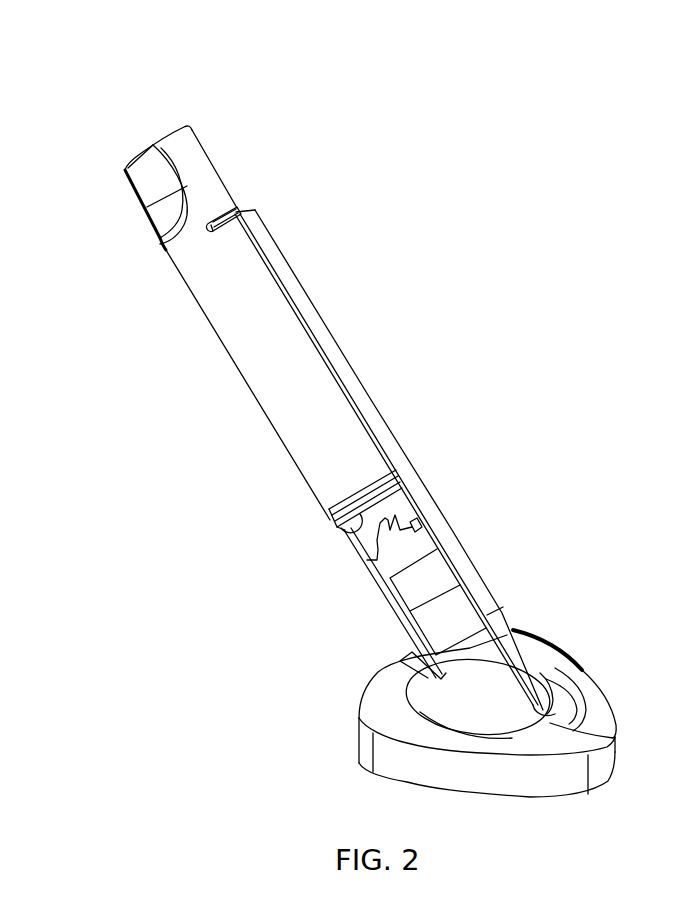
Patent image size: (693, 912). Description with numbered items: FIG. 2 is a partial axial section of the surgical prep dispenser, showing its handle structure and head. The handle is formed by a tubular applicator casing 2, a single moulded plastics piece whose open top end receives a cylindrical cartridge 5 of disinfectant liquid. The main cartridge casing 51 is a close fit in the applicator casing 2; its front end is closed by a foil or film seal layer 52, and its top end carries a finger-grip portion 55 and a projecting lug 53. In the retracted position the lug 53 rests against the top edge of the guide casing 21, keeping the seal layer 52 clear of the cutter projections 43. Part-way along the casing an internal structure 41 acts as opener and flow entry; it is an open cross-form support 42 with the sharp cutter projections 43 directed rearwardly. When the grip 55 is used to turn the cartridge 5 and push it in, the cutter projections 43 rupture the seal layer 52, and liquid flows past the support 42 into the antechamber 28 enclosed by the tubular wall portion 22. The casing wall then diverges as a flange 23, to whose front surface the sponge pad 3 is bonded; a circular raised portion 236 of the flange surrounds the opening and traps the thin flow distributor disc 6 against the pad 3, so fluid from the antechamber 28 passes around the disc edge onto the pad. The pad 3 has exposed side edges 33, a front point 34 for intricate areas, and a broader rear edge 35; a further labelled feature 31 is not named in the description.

The tubular applicator casing 2 is at (395, 463).
The sponge pad 3 is at (487, 712).
The cylindrical cartridge 5 is at (244, 350).
The flow distributor disc 6 is at (521, 713).
The guide casing 21 is at (350, 366).
The tubular wall portion 22 is at (478, 578).
The flange 23 is at (573, 666).
The antechamber 28 is at (461, 628).
The recess 31 is at (552, 738).
The side edges 33 is at (453, 770).
The front point 34 is at (598, 775).
The rear edge 35 is at (370, 690).
The internal structure 41 is at (373, 576).
The cross-form support 42 is at (418, 543).
The cutter projections 43 is at (425, 522).
The main cartridge casing 51 is at (265, 332).
The foil or film seal layer 52 is at (350, 530).
The projecting lug 53 is at (238, 210).
The finger-grip portion 55 is at (150, 181).
The circular raised portion 236 is at (543, 661).